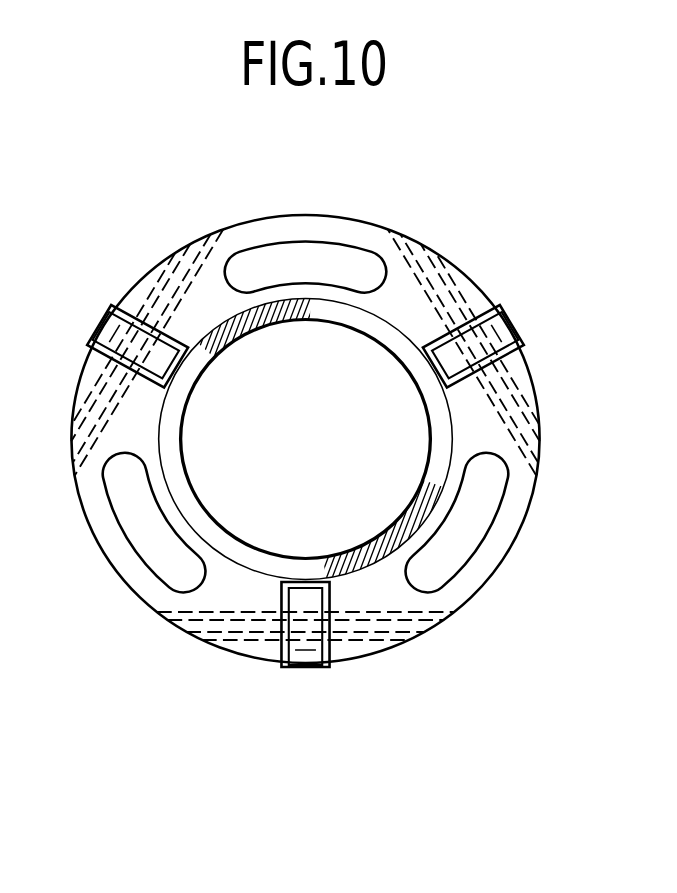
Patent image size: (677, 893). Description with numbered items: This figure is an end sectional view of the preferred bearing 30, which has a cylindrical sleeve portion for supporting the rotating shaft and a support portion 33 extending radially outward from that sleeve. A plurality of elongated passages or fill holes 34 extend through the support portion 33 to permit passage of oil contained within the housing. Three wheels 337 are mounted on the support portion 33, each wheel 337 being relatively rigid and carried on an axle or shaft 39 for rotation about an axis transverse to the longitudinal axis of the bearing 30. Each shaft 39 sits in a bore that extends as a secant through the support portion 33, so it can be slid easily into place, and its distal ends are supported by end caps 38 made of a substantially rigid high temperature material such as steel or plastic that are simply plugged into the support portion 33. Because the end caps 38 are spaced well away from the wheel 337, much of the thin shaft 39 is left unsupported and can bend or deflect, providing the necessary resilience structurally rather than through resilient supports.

The bearing 30 is at (172, 205).
The support portion 33 is at (343, 225).
The elongated passages or fill holes 34 is at (124, 504).
The wheel 337 is at (498, 318).
The end cap 38 is at (437, 250).
The axle or shaft 39 is at (540, 440).